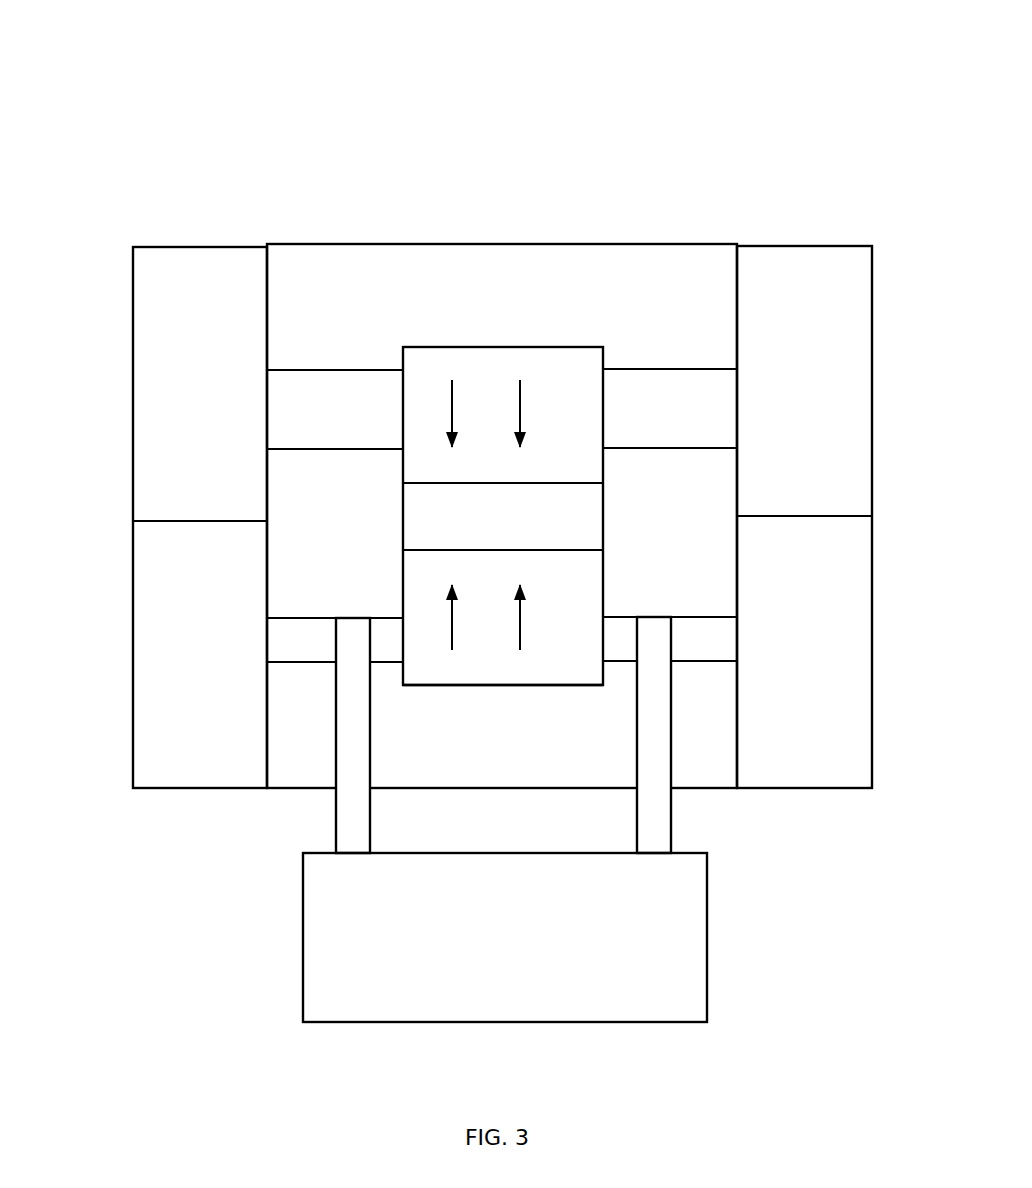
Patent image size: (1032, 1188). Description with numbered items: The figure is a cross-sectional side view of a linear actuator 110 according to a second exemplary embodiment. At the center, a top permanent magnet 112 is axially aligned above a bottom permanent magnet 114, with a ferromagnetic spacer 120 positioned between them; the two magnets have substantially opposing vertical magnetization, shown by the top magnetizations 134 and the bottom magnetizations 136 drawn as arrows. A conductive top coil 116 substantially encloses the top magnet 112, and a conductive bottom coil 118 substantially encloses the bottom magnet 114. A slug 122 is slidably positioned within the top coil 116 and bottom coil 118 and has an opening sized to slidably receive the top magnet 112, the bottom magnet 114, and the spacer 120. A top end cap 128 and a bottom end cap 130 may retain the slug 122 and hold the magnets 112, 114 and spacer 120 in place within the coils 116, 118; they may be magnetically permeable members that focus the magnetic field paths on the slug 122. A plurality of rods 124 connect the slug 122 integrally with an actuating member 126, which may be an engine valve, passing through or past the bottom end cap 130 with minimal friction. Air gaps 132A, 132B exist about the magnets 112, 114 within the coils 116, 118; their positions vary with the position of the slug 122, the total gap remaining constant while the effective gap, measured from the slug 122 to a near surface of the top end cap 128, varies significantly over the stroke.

The linear actuator 110 is at (480, 548).
The top permanent magnet 112 is at (469, 502).
The bottom permanent magnet 114 is at (470, 686).
The conductive top coil 116 is at (200, 245).
The conductive bottom coil 118 is at (825, 788).
The ferromagnetic spacer 120 is at (538, 481).
The slug 122 is at (368, 447).
The rods 124 is at (333, 790).
The actuating member 126 is at (302, 992).
The top end cap 128 is at (527, 242).
The bottom end cap 130 is at (715, 788).
The air gap 132A is at (293, 422).
The air gap 132B is at (293, 643).
The top magnetizations 134 is at (448, 412).
The bottom magnetizations 136 is at (455, 622).